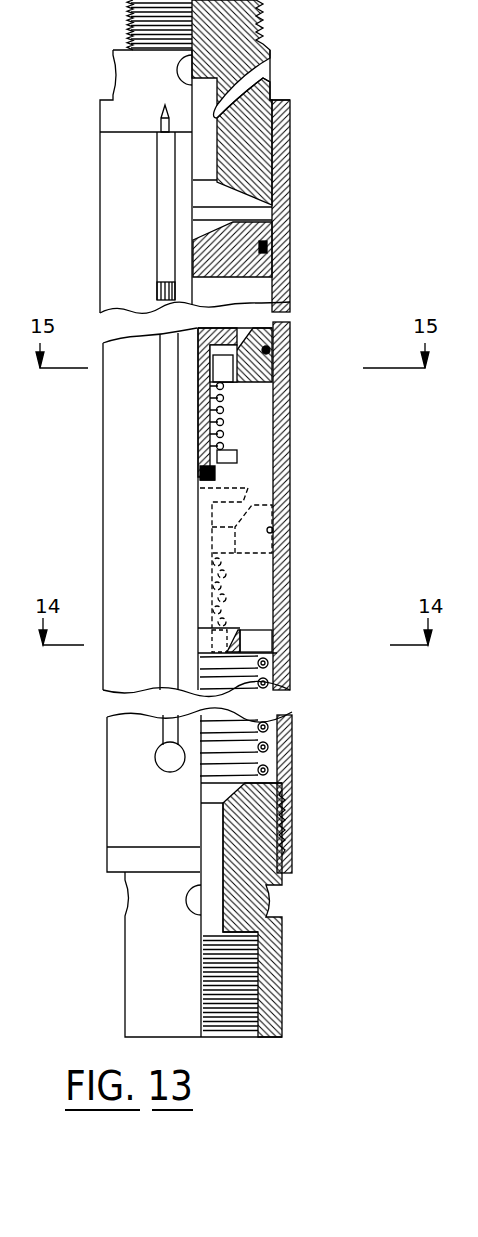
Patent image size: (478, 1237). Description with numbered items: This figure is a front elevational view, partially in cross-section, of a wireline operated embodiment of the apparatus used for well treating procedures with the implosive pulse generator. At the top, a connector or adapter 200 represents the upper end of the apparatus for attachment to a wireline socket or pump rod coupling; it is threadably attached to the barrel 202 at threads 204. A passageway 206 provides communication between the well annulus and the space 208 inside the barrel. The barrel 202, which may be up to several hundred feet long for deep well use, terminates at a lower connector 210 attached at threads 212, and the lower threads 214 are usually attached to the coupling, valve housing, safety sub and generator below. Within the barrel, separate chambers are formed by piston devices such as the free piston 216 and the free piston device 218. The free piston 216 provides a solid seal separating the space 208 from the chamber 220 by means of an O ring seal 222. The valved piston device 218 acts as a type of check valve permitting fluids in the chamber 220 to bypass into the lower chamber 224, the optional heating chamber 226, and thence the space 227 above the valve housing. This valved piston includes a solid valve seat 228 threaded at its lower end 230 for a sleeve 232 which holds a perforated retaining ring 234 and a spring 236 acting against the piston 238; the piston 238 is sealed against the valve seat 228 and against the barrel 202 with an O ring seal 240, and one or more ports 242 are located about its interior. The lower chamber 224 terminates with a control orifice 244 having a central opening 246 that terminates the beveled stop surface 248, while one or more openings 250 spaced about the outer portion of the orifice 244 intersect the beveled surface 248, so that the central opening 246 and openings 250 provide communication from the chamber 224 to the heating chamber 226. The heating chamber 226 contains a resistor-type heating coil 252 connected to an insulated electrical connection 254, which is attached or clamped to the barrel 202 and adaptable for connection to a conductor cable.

The connector or adapter 200 is at (250, 33).
The barrel 202 is at (283, 223).
The threads 204 is at (281, 157).
The passageway 206 is at (253, 80).
The space 208 is at (203, 144).
The lower connector 210 is at (295, 858).
The threads 212 is at (295, 801).
The lower threads 214 is at (258, 997).
The free piston 216 is at (285, 282).
The free piston device 218 is at (255, 389).
The chamber 220 is at (218, 295).
The O ring seal 222 is at (283, 247).
The lower chamber 224 is at (253, 484).
The heating chamber 226 is at (285, 716).
The space 227 is at (212, 829).
The valve seat 228 is at (203, 415).
The lower end 230 is at (203, 465).
The sleeve 232 is at (203, 481).
The perforated retaining ring 234 is at (238, 457).
The spring 236 is at (224, 434).
The piston 238 is at (267, 332).
The O ring seal 240 is at (268, 349).
The ports 242 is at (222, 365).
The control orifice 244 is at (250, 626).
The central opening 246 is at (208, 652).
The beveled stop surface 248 is at (233, 636).
The openings 250 is at (260, 642).
The heating coil 252 is at (270, 664).
The insulated electrical connection 254 is at (170, 556).